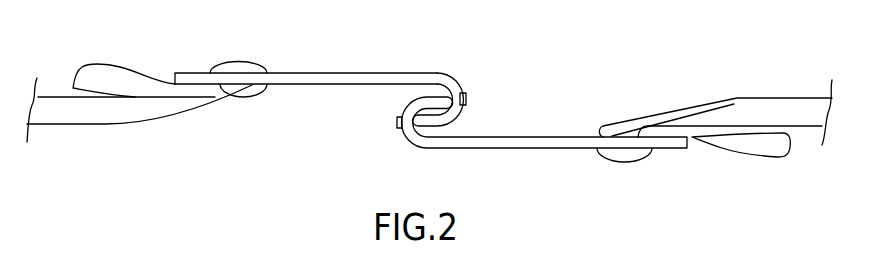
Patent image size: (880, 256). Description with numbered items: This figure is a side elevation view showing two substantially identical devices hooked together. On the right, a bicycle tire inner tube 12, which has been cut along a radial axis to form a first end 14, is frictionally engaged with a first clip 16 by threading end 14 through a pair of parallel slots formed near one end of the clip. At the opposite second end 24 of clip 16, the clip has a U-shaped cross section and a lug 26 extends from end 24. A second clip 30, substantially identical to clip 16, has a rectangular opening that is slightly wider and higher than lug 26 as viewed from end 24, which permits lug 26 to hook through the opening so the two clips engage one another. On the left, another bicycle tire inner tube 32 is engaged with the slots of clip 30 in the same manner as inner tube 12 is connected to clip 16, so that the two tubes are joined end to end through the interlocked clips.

The bicycle tire inner tube 12 is at (773, 98).
The first end 14 is at (791, 152).
The first clip 16 is at (547, 137).
The second end 24 is at (456, 90).
The lug 26 is at (467, 100).
The second clip 30 is at (372, 72).
The bicycle tire inner tube 32 is at (52, 90).